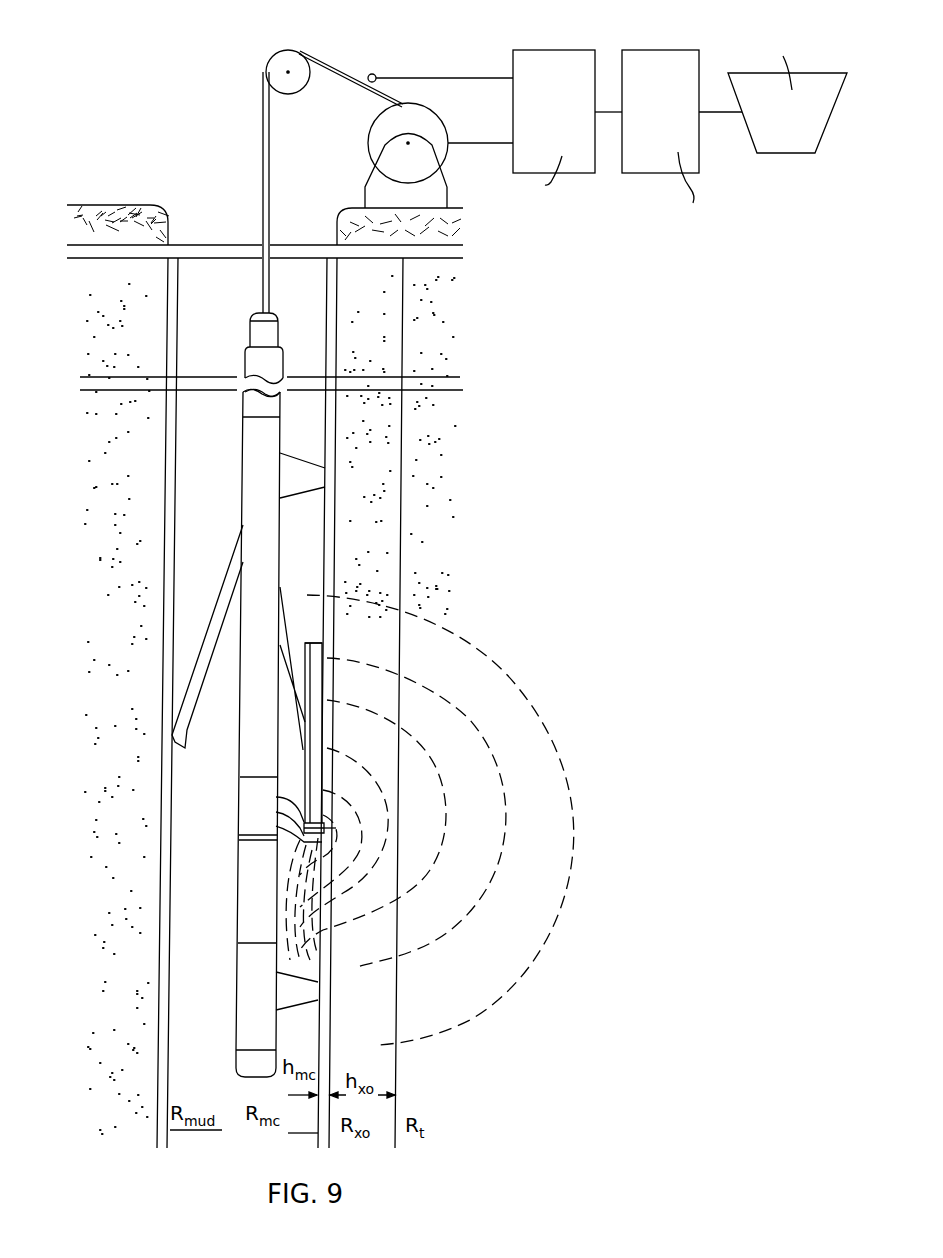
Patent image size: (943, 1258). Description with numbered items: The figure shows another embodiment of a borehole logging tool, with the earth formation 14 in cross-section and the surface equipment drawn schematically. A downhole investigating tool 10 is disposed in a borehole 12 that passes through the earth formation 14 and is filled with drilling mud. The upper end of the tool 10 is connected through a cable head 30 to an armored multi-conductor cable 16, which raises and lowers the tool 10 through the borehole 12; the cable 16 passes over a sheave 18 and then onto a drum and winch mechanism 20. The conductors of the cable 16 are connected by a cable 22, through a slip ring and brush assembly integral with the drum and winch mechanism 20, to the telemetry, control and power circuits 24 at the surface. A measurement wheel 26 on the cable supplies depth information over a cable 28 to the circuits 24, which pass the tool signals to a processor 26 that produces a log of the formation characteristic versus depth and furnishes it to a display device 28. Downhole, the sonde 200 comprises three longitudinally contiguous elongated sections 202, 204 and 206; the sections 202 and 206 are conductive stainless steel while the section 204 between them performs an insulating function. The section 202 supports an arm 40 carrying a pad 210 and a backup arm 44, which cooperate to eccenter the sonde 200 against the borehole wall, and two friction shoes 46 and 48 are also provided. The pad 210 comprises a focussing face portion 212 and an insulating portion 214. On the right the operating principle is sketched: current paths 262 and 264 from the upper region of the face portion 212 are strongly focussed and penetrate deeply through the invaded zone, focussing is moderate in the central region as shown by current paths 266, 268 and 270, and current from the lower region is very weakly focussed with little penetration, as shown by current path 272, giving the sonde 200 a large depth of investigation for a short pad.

The downhole investigating tool 10 is at (243, 340).
The borehole 12 is at (193, 243).
The earth formation 14 is at (353, 463).
The armored multi-conductor cable 16 is at (264, 170).
The sheave 18 is at (264, 96).
The drum and winch mechanism 20 is at (397, 187).
The cable 22 is at (481, 143).
The telemetry, control and power circuits 24 is at (541, 50).
The processor 26 is at (637, 135).
The display device 28 is at (758, 122).
The cable head 30 is at (253, 377).
The arm 40 is at (300, 726).
The backup arm 44 is at (207, 630).
The friction shoe 46 is at (302, 475).
The friction shoe 48 is at (297, 991).
The sonde 200 is at (240, 443).
The elongated section 202 is at (248, 453).
The elongated section 204 is at (241, 861).
The elongated section 206 is at (241, 974).
The pad 210 is at (298, 738).
The focussing face portion 212 is at (324, 646).
The insulating portion 214 is at (257, 788).
The current path 262 is at (437, 693).
The current path 264 is at (417, 743).
The current path 266 is at (327, 750).
The current path 268 is at (340, 812).
The current path 270 is at (325, 830).
The current path 272 is at (279, 819).